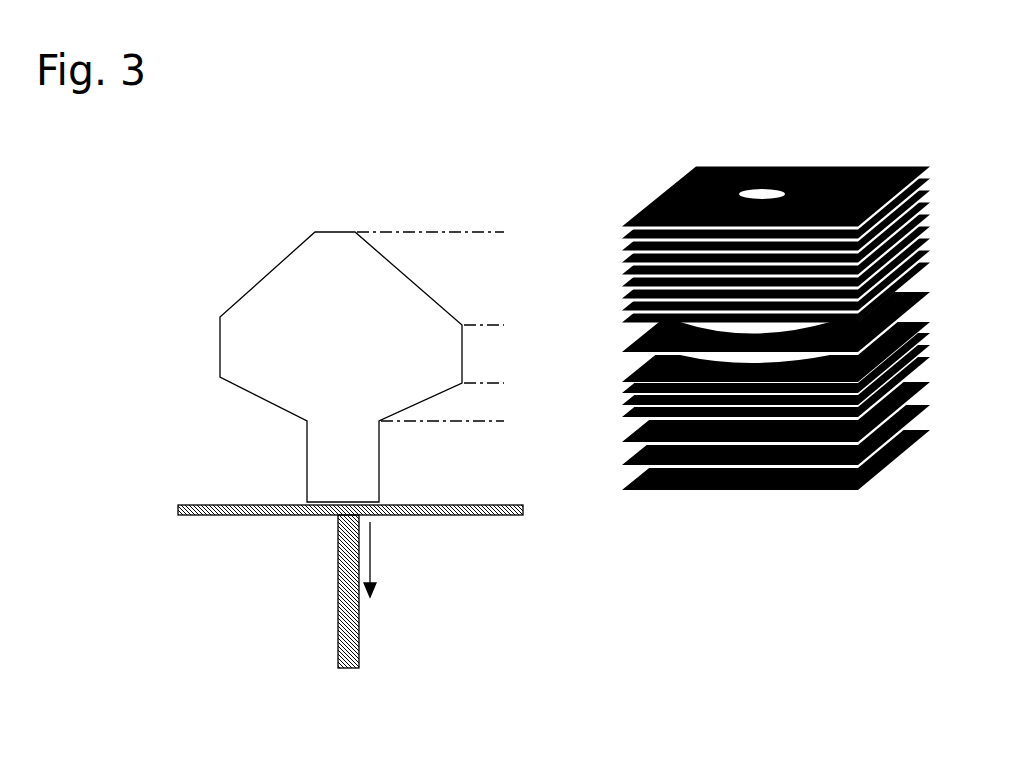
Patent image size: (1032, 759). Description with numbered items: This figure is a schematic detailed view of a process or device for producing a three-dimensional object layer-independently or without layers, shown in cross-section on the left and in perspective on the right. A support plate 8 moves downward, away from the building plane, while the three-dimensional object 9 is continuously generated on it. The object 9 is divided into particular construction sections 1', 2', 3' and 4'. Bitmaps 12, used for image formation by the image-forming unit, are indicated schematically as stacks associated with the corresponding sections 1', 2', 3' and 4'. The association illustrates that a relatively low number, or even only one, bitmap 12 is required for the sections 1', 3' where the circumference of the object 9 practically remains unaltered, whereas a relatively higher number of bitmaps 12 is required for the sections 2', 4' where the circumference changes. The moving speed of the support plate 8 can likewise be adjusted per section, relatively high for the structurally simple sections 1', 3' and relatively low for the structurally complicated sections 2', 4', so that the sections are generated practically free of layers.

The support plate 8 is at (248, 515).
The three-dimensional object 9 is at (292, 282).
The bitmaps 12 is at (716, 270).
The construction section 1' is at (716, 431).
The construction section 2' is at (716, 376).
The construction section 3' is at (716, 322).
The construction section 4' is at (716, 245).